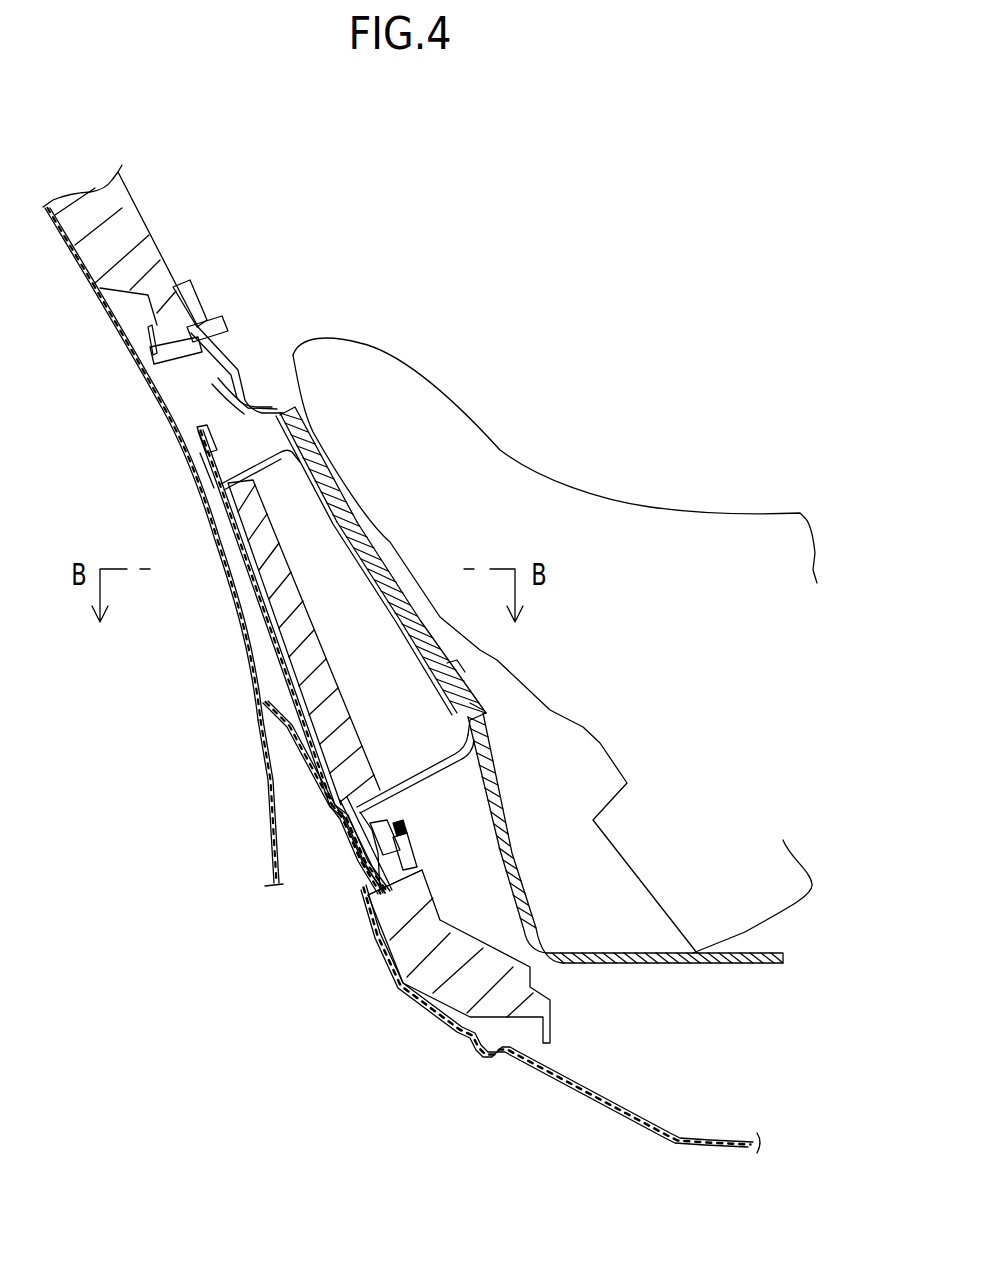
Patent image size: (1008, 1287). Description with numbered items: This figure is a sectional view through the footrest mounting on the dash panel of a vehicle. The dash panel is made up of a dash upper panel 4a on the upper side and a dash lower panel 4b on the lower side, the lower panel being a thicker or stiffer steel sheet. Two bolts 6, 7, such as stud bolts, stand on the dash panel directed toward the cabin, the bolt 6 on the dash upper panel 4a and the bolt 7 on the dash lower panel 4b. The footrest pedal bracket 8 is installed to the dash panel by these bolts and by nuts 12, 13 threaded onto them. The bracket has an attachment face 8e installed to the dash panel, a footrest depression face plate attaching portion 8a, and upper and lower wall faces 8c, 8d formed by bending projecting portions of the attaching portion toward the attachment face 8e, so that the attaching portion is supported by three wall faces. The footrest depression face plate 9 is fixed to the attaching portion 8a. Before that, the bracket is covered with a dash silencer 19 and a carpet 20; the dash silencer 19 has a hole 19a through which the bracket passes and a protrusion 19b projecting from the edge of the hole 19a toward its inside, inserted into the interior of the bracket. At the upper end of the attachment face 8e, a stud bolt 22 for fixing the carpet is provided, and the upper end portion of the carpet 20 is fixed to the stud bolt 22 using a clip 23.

The dash silencer 19 is at (130, 230).
The hole 19a is at (230, 380).
The protrusion 19b is at (318, 665).
The clip 23 is at (222, 333).
The stud bolt 22 is at (130, 350).
The bolt 6 is at (228, 417).
The footrest depression face plate 9 is at (318, 445).
The footrest pedal bracket 8 is at (352, 515).
The footrest depression face plate attaching portion 8a is at (453, 670).
The upper wall face 8c is at (277, 462).
The lower wall face 8d is at (428, 755).
The attachment face 8e is at (292, 675).
The nut 12 is at (193, 477).
The dash upper panel 4a is at (173, 430).
The dash lower panel 4b is at (324, 798).
The nut 13 is at (367, 877).
The bolt 7 is at (402, 822).
The carpet 20 is at (505, 802).